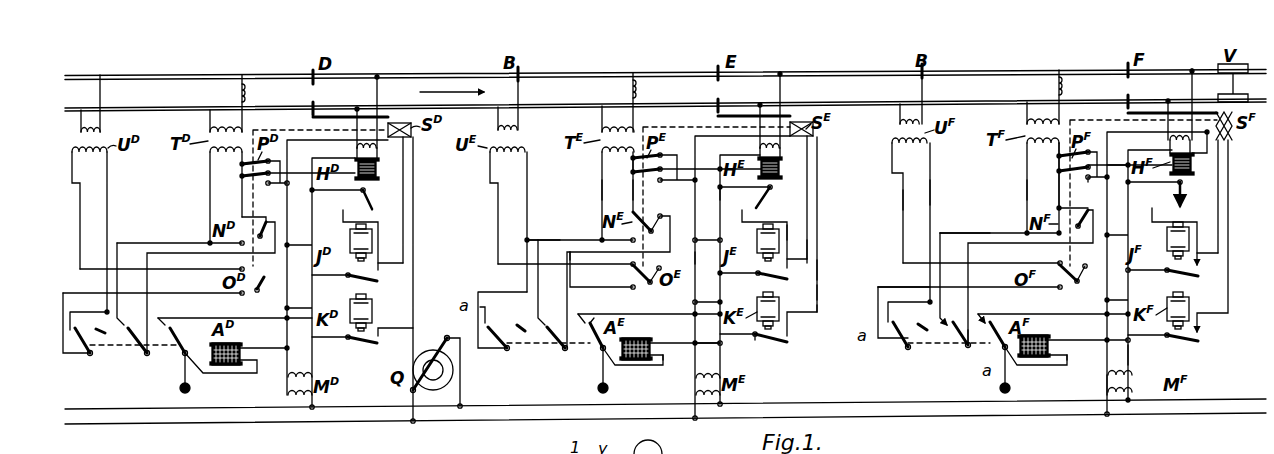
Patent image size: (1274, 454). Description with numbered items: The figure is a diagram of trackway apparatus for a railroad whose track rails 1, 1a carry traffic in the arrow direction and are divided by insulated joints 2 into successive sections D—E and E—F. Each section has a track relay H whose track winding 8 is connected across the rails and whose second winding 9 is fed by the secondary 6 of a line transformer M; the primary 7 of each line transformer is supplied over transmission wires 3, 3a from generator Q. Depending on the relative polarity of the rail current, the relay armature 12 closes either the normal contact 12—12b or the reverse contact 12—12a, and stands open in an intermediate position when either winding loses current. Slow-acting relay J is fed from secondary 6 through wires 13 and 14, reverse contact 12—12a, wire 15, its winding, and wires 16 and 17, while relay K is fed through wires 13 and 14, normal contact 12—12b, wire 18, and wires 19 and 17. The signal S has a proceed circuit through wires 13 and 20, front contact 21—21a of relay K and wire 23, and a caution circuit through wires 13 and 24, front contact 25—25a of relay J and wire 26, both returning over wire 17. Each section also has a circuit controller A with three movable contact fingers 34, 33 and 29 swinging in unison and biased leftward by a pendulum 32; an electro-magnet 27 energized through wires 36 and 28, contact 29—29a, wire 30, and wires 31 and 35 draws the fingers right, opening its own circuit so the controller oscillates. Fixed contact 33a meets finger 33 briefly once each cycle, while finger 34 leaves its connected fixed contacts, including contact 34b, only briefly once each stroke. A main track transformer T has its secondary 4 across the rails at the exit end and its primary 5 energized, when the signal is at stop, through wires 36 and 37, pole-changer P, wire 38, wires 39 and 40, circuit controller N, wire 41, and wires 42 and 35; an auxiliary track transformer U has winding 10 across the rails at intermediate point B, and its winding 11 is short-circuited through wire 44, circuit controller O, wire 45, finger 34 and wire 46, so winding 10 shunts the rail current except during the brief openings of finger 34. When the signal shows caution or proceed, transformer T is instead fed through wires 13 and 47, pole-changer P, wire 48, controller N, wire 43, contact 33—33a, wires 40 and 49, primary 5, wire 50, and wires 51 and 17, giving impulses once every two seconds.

The track rail 1 is at (578, 60).
The track rail 1a is at (582, 104).
The insulated joints 2 is at (316, 84).
The transmission wire 3 is at (509, 404).
The transmission wire 3a is at (484, 425).
The secondary of main track transformer 4 is at (213, 130).
The primary of track transformer 5 is at (213, 150).
The secondary of line transformer 6 is at (300, 376).
The primary of line transformer 7 is at (287, 395).
The track winding 8 is at (357, 147).
The second winding 9 is at (380, 175).
The winding of auxiliary track transformer 10 is at (97, 130).
The winding of auxiliary track transformer 11 is at (95, 152).
The armature 12 is at (1182, 193).
The reverse contact 12a is at (350, 214).
The normal contact 12b is at (368, 203).
The wire 13 is at (727, 343).
The wire 14 is at (755, 200).
The wire 15 is at (790, 231).
The wire 16 is at (707, 228).
The wire 17 is at (694, 258).
The wire 18 is at (818, 307).
The wire 19 is at (707, 293).
The wire 20 is at (765, 342).
The front contact 21 is at (362, 344).
The front contact 21a is at (803, 241).
The wire 23 is at (818, 287).
The wire 24 is at (746, 273).
The front contact 25 is at (773, 282).
The front contact 25a is at (818, 267).
The wire 26 is at (809, 253).
The electro-magnet 27 is at (640, 338).
The wire 28 is at (673, 315).
The movable contact finger 29 is at (1000, 314).
The fixed contact 29a is at (600, 320).
The wire 30 is at (630, 368).
The wire 31 is at (663, 350).
The pendulum 32 is at (608, 389).
The movable contact finger 33 is at (548, 340).
The fixed contact 33a is at (950, 356).
The movable contact finger 34 is at (482, 320).
The fixed contact 34b is at (517, 323).
The wire 35 is at (1106, 378).
The wire 36 is at (1128, 353).
The wire 37 is at (1117, 161).
The wire 38 is at (1044, 161).
The wire 39 is at (1025, 190).
The wire 40 is at (575, 240).
The wire 41 is at (1057, 196).
The wire 42 is at (1094, 186).
The wire 43 is at (580, 272).
The wire 44 is at (902, 200).
The wire 45 is at (897, 289).
The wire 46 is at (930, 198).
The wire 47 is at (705, 166).
The wire 48 is at (618, 192).
The wire 49 is at (600, 192).
The wire 50 is at (618, 167).
The wire 51 is at (677, 184).